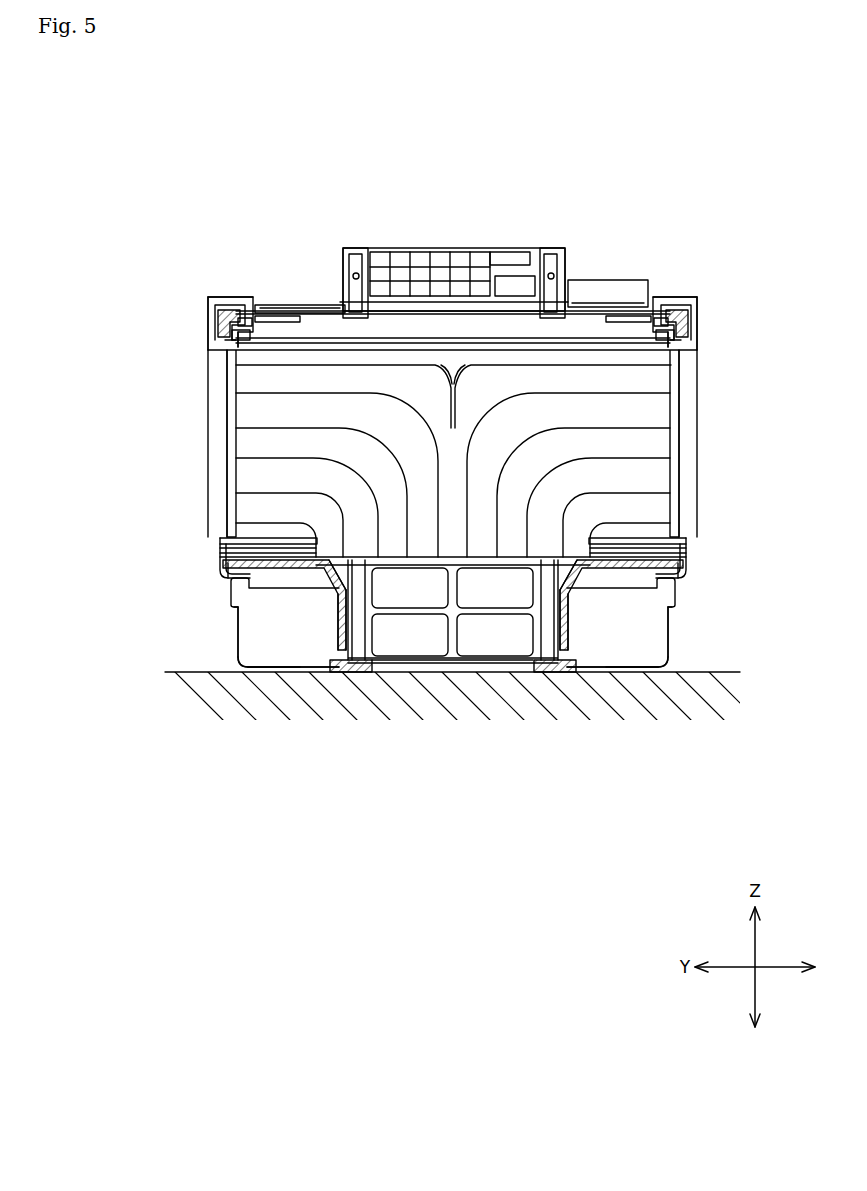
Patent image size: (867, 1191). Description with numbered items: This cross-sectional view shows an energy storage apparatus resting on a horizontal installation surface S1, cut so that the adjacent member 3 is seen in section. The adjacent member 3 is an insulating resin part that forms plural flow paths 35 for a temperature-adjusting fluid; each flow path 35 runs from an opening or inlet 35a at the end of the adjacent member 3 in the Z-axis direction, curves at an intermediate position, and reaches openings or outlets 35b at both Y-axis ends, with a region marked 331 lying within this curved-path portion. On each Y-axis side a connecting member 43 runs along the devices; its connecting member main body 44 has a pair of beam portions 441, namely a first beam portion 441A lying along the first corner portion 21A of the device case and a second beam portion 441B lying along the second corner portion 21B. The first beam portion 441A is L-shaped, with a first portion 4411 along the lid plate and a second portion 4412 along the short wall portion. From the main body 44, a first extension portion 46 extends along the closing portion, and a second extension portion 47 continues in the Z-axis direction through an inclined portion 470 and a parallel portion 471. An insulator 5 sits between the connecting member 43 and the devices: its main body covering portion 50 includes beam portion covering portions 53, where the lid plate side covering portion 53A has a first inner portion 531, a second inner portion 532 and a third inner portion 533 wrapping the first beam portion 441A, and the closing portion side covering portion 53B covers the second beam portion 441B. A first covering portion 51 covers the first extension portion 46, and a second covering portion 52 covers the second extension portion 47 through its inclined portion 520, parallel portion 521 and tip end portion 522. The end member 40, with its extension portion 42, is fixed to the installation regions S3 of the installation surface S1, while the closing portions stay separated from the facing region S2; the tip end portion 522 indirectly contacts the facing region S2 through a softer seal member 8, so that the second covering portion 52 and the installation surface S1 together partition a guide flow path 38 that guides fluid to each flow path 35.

The adjacent member 3 is at (467, 434).
The case side wall flow lines 331 is at (650, 445).
The flow path 35 is at (443, 380).
The opening (inlet) 35a is at (449, 545).
The openings (outlets) 35b is at (234, 372).
The insulator 5 is at (188, 321).
The first corner portion 21A is at (228, 341).
The second corner portion 21B is at (240, 592).
The beam portion covering portion 53 is at (449, 409).
The lid plate side covering portion 53A is at (232, 207).
The closing portion side covering portion 53B is at (238, 532).
The first inner portion 531 is at (262, 328).
The second inner portion 532 is at (242, 318).
The third inner portion 533 is at (236, 336).
The beam portion 441 is at (452, 344).
The first beam portion 441A is at (150, 147).
The second beam portion 441B is at (218, 563).
The first portion 4411 is at (237, 345).
The second portion 4412 is at (222, 330).
The connecting member main body 44 is at (222, 552).
The main body covering portion 50 is at (228, 541).
The first covering portion 51 is at (283, 566).
The connecting member 43 is at (217, 584).
The first extension portion 46 is at (238, 612).
The end member 40 is at (451, 697).
The extension portion 42 is at (246, 650).
The second extension portion 47 is at (453, 703).
The inclined portion 470 is at (268, 575).
The parallel portion 471 is at (303, 590).
The seal member 8 is at (340, 670).
The second covering portion 52 is at (452, 719).
The inclined portion 520 is at (348, 595).
The parallel portion 521 is at (362, 610).
The tip end portion 522 is at (345, 630).
The guide flow path 38 is at (439, 648).
The installation surface S1 is at (705, 672).
The facing region S2 is at (465, 700).
The installation regions S3 is at (268, 680).